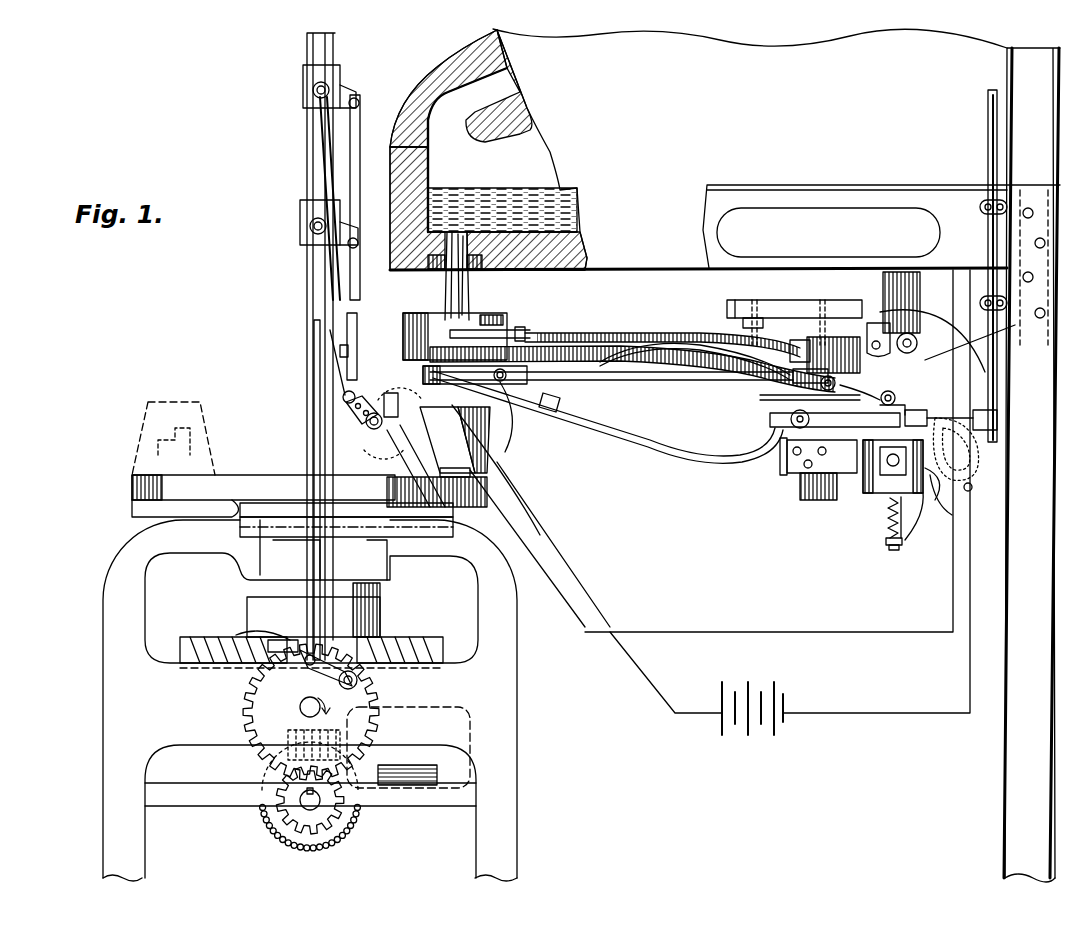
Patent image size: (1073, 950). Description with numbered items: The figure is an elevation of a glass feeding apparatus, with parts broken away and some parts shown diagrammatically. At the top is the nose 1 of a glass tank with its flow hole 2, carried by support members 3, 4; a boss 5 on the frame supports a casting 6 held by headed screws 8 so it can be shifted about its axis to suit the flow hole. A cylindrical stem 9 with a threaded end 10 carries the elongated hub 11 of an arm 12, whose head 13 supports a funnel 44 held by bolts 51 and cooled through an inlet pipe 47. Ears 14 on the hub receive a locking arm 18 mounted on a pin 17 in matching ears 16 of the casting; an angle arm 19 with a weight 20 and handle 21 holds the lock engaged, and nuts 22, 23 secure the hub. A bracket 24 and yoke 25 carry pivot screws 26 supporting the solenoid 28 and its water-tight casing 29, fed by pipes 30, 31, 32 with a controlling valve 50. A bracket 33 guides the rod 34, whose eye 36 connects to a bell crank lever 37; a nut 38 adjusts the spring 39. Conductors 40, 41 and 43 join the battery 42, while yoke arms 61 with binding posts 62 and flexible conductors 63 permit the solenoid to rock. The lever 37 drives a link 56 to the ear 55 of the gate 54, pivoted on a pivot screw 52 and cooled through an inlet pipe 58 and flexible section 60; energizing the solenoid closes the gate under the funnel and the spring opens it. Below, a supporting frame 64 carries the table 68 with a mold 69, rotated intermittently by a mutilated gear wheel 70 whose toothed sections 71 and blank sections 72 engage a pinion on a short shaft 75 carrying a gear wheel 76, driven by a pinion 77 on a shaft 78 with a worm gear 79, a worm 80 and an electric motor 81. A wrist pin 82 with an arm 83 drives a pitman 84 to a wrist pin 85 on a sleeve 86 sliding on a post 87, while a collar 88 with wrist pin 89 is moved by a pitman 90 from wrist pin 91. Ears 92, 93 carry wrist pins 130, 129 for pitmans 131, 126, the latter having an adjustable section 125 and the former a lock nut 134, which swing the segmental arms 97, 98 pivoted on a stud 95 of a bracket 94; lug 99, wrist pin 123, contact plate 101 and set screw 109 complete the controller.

The nose 1 is at (698, 149).
The flow hole 2 is at (470, 282).
The support member 3 is at (1005, 66).
The support member 4 is at (850, 190).
The plate or boss 5 is at (758, 300).
The casting 6 is at (728, 308).
The headed screws 8 is at (746, 326).
The stem 9 is at (806, 350).
The threaded end 10 is at (812, 498).
The elongated hub 11 is at (797, 398).
The arm 12 is at (655, 345).
The head 13 is at (518, 345).
The ears 14 is at (890, 375).
The matching ears 16 is at (890, 275).
The pin 17 is at (922, 282).
The arm 18 is at (870, 336).
The arm 19 is at (918, 308).
The weight 20 is at (918, 340).
The handle 21 is at (985, 332).
The adjusting and bearing nut 22 is at (790, 460).
The lock nut 23 is at (785, 472).
The bracket 24 is at (885, 482).
The yoke 25 is at (880, 472).
The pivot screws 26 is at (890, 478).
The solenoid 28 is at (932, 476).
The casing 29 is at (942, 508).
The pipe 30 is at (975, 470).
The pipe 31 is at (922, 414).
The pipe 32 is at (998, 392).
The bracket 33 is at (888, 503).
The rod 34 is at (901, 506).
The eye 36 is at (905, 408).
The bell crank lever 37 is at (888, 405).
The nut 38 is at (892, 548).
The spring 39 is at (906, 543).
The conductor 40 is at (968, 620).
The conductor 41 is at (556, 586).
The battery 42 is at (752, 723).
The conductor 43 is at (648, 672).
The funnel 44 is at (426, 325).
The inlet conduit or pipe 47 is at (585, 346).
The controlling valve 50 is at (790, 427).
The bolts 51 is at (560, 330).
The pivot screw 52 is at (516, 325).
The gate 54 is at (424, 374).
The ear 55 is at (531, 405).
The link 56 is at (668, 382).
The inlet pipe 58 is at (508, 430).
The flexible section 60 is at (632, 440).
The arms 61 is at (927, 420).
The binding post 62 is at (975, 470).
The flexible conductors 63 is at (998, 420).
The supporting frame 64 is at (102, 702).
The table 68 is at (136, 492).
The mold 69 is at (500, 482).
The gear wheel 70 is at (200, 637).
The sections of gear teeth 71 is at (186, 662).
The blank sections 72 is at (365, 650).
The short shaft 75 is at (303, 710).
The gear wheel 76 is at (372, 722).
The pinion 77 is at (340, 830).
The shaft 78 is at (305, 812).
The worm gear 79 is at (268, 822).
The worm 80 is at (290, 750).
The electric motor 81 is at (420, 786).
The wrist pin 82 is at (282, 640).
The arm 83 is at (322, 674).
The pitman 84 is at (300, 527).
The wrist pin 85 is at (309, 226).
The sleeve 86 is at (305, 240).
The post 87 is at (305, 292).
The slidable collar 88 is at (308, 100).
The wrist pin 89 is at (312, 88).
The pitman 90 is at (325, 152).
The wrist pin 91 is at (358, 681).
The ear 92 is at (352, 230).
The ear 93 is at (350, 98).
The bracket 94 is at (505, 512).
The stud 95 is at (468, 440).
The segmental arm 97 is at (362, 433).
The segmental arm 98 is at (360, 420).
The lug 99 is at (343, 406).
The curved plate 101 is at (372, 445).
The set screw 109 is at (420, 394).
The wrist pin 123 is at (344, 394).
The section 125 is at (349, 352).
The pitman 126 is at (355, 165).
The wrist pin 129 is at (359, 103).
The wrist pin 130 is at (356, 247).
The pitman 131 is at (357, 318).
The lock nut 134 is at (318, 360).